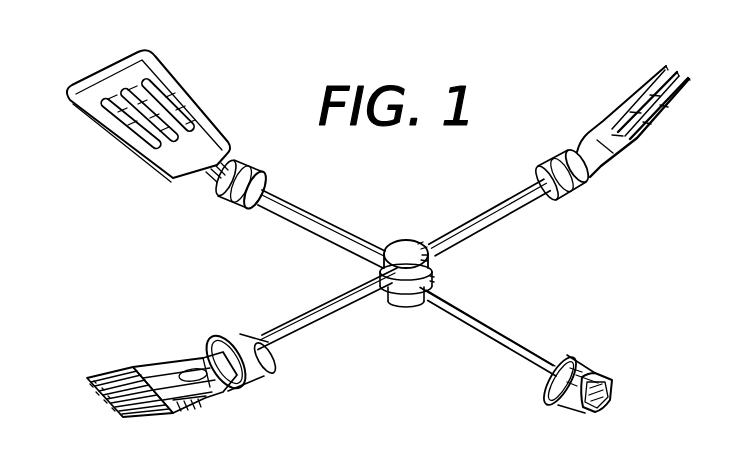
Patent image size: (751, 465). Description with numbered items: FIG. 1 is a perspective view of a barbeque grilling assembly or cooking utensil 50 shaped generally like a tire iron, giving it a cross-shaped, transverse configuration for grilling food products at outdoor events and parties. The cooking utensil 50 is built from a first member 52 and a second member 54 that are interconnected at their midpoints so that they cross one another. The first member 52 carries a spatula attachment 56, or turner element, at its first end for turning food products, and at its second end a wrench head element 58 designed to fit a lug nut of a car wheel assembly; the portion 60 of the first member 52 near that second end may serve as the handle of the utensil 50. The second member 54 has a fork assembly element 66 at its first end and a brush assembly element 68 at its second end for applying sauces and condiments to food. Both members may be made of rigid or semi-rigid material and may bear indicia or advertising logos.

The cooking utensil 50 is at (560, 274).
The first member 52 is at (328, 228).
The second member 54 is at (508, 205).
The spatula attachment 56 is at (167, 84).
The wrench head element 58 is at (583, 368).
The portion of the first member 60 is at (498, 337).
The fork assembly element 66 is at (633, 132).
The brush assembly element 68 is at (163, 368).